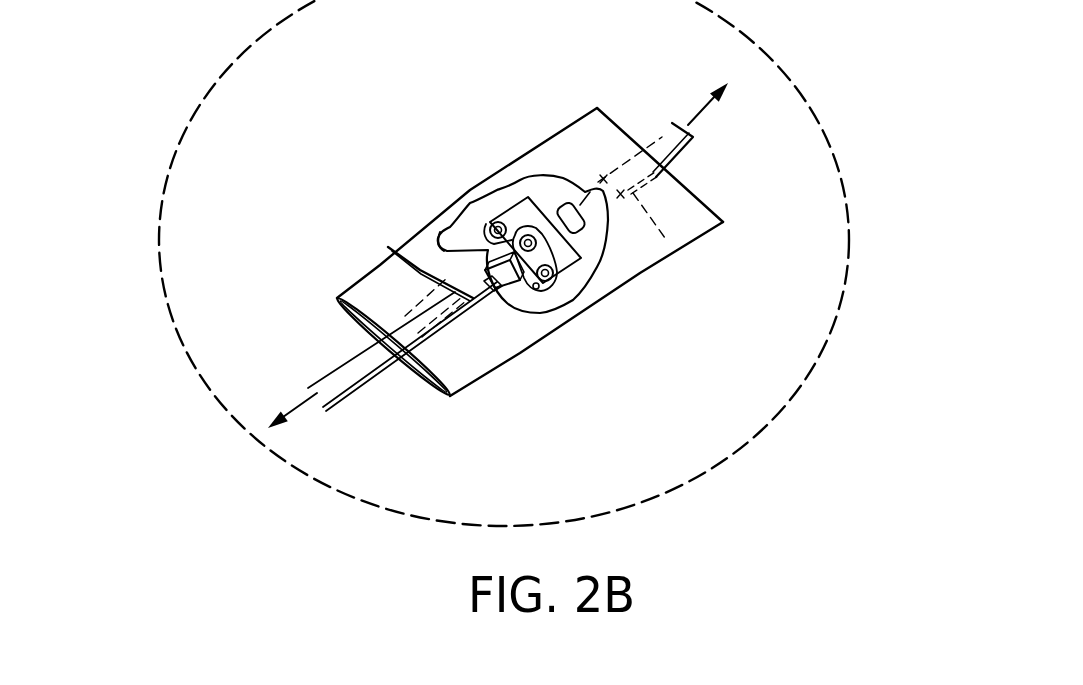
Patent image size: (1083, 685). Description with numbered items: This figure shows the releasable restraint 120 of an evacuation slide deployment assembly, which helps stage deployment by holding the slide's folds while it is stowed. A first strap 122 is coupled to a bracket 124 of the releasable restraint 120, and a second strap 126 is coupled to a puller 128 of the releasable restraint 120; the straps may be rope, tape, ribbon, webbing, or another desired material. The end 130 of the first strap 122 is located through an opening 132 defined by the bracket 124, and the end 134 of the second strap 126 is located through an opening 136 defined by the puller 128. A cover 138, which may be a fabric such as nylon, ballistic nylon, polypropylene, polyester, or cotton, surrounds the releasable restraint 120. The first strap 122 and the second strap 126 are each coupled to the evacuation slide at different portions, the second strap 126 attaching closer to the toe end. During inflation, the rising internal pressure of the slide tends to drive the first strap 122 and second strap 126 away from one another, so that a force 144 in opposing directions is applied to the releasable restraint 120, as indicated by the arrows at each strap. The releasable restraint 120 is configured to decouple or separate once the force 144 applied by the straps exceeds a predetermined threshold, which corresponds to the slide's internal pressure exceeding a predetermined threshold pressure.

The releasable restraint 120 is at (487, 194).
The first strap 122 is at (672, 146).
The bracket 124 is at (562, 276).
The second strap 126 is at (340, 367).
The puller 128 is at (440, 235).
The end of first strap 130 is at (577, 205).
The opening 132 is at (584, 241).
The end of second strap 134 is at (489, 288).
The opening 136 is at (518, 297).
The cover 138 is at (690, 219).
The force 144 is at (703, 107).